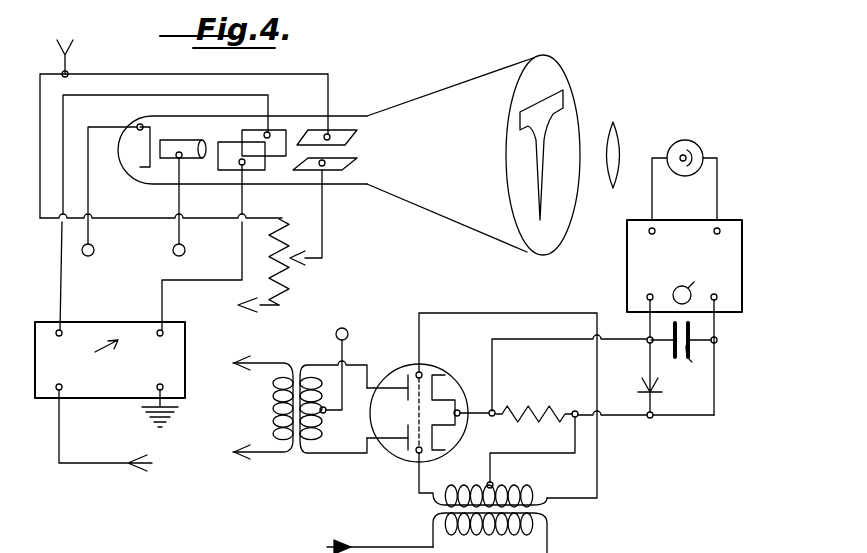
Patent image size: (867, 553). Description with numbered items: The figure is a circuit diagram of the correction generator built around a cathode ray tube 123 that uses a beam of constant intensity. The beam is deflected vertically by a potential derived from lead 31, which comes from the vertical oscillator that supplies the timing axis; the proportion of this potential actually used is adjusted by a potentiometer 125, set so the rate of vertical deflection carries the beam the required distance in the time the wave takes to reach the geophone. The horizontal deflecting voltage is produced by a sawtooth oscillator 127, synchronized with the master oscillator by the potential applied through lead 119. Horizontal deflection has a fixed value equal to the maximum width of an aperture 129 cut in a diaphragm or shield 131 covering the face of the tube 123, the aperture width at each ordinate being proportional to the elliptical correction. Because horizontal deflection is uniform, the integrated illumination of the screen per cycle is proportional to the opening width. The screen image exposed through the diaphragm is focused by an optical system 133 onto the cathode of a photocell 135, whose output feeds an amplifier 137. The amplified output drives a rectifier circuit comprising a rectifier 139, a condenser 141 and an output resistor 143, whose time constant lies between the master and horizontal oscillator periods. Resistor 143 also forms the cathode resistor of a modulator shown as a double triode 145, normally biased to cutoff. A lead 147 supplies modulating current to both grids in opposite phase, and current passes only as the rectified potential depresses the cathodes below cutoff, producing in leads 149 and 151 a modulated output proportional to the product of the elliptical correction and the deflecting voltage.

The lead 31 is at (260, 308).
The lead 119 is at (107, 466).
The cathode ray tube 123 is at (413, 98).
The potentiometer 125 is at (286, 273).
The sawtooth oscillator 127 is at (108, 399).
The aperture 129 is at (520, 118).
The diaphragm or shield 131 is at (513, 167).
The optical system 133 is at (611, 190).
The photocell 135 is at (687, 180).
The amplifier 137 is at (627, 281).
The rectifier 139 is at (643, 383).
The condenser 141 is at (682, 357).
The output resistor 143 is at (532, 405).
The double triode 145 is at (461, 378).
The lead 147 is at (381, 546).
The lead 149 is at (257, 368).
The lead 151 is at (274, 456).